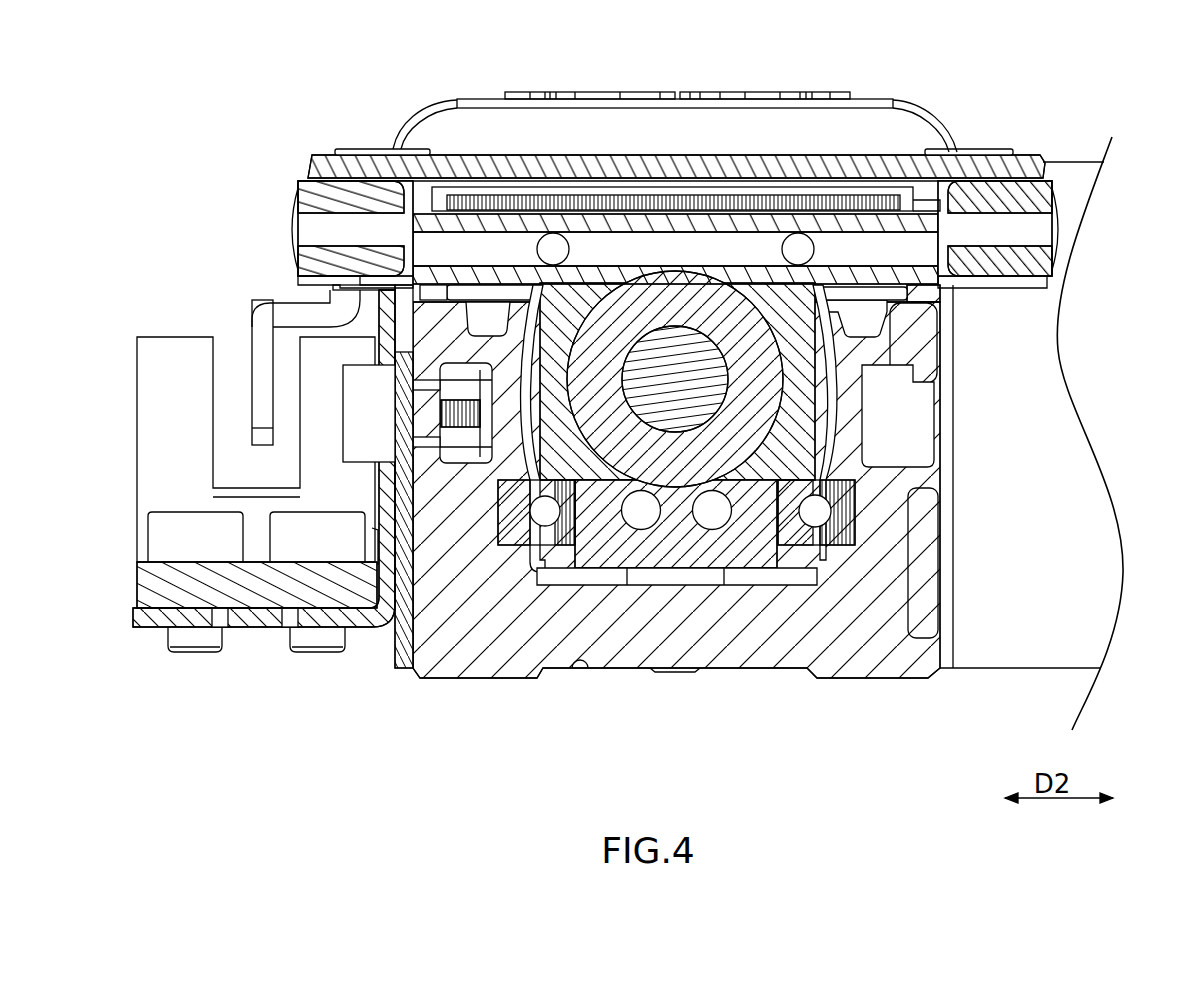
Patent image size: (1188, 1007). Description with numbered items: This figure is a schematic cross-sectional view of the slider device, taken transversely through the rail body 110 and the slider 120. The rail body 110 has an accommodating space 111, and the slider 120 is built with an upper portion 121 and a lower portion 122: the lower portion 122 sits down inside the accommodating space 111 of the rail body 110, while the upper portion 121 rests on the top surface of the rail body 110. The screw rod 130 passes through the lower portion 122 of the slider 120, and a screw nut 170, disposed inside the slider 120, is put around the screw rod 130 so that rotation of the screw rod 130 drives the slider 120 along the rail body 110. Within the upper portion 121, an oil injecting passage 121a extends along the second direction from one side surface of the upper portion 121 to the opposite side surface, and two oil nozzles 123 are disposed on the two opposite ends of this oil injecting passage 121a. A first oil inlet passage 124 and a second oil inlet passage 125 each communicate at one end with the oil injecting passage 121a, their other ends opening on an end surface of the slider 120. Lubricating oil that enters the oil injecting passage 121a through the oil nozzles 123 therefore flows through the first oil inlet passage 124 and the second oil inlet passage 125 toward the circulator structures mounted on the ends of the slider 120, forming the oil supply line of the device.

The rail body 110 is at (905, 650).
The accommodating space 111 is at (785, 577).
The slider 120 is at (790, 303).
The upper portion 121 is at (691, 137).
The oil injecting passage 121a is at (835, 243).
The lower portion 122 is at (625, 518).
The oil nozzle 123 is at (318, 200).
The first oil inlet passage 124 is at (795, 233).
The second oil inlet passage 125 is at (553, 233).
The screw rod 130 is at (705, 387).
The screw nut 170 is at (752, 348).